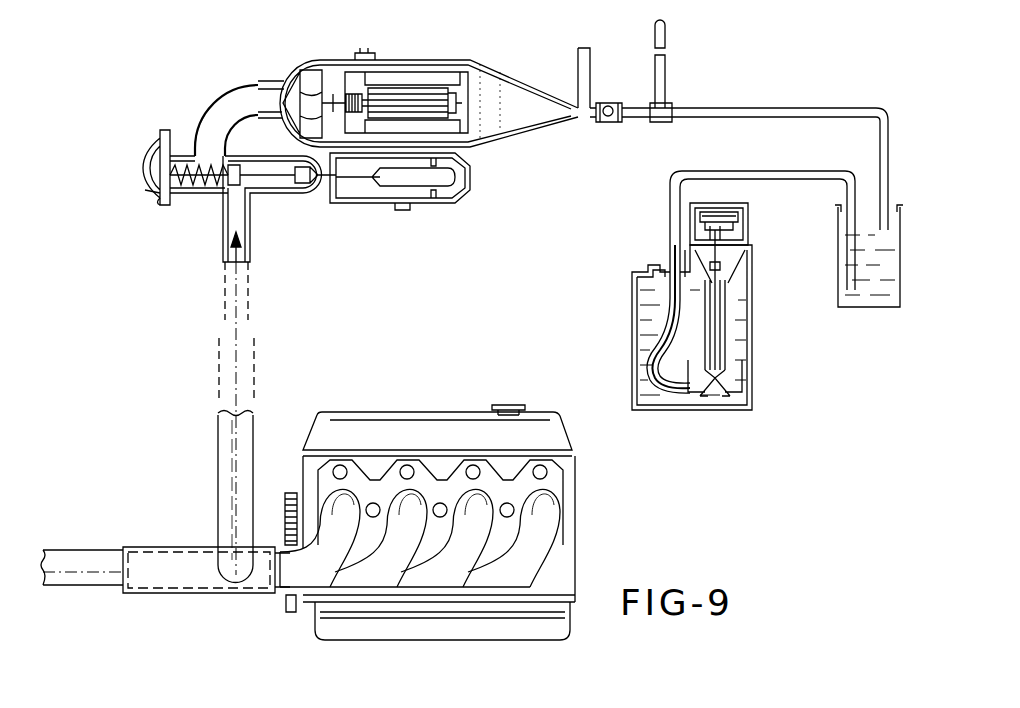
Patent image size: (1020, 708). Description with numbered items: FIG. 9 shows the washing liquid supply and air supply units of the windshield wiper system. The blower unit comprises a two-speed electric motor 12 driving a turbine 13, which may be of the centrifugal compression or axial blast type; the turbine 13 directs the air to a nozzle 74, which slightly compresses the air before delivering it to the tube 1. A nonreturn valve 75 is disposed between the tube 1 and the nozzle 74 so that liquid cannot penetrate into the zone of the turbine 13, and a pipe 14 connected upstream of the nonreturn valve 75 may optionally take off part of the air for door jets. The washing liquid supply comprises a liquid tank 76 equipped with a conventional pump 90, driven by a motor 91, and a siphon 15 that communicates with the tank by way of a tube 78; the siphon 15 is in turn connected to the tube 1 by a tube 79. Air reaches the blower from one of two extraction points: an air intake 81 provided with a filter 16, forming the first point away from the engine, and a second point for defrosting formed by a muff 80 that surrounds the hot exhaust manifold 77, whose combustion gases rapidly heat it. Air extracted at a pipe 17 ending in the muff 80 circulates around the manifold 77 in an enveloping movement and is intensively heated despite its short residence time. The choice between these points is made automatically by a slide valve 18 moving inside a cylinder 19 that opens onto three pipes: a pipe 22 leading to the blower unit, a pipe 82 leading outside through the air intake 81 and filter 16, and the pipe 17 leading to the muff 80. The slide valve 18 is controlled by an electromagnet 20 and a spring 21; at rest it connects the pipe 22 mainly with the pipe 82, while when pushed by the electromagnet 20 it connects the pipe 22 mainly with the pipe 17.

The tube 1 is at (655, 32).
The two-speed electric motor 12 is at (432, 92).
The turbine 13 is at (312, 75).
The pipe 14 is at (579, 62).
The siphon 15 is at (860, 308).
The filter 16 is at (150, 188).
The pipe 17 is at (235, 565).
The slide valve 18 is at (272, 192).
The cylinder 19 is at (308, 187).
The electromagnet 20 is at (452, 192).
The spring 21 is at (208, 249).
The pipe 22 is at (230, 104).
The nozzle 74 is at (548, 124).
The nonreturn valve 75 is at (608, 120).
The liquid tank 76 is at (632, 345).
The manifold 77 is at (78, 549).
The tube 78 is at (810, 176).
The tube 79 is at (828, 110).
The muff 80 is at (172, 595).
The air intake 81 is at (152, 166).
The pipe 82 is at (184, 109).
The pump 90 is at (735, 352).
The motor 91 is at (710, 216).